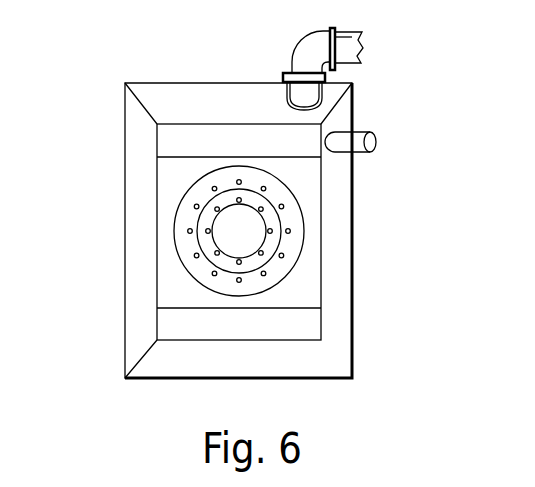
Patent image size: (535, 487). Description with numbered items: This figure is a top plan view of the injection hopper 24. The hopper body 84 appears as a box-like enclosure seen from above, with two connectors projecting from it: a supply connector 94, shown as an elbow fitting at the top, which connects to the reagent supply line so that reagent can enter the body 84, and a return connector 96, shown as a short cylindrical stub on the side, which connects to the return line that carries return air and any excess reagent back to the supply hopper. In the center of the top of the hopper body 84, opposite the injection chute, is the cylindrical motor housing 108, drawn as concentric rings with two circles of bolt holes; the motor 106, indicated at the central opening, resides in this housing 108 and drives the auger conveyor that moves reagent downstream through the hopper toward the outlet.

The injection hopper 24 is at (100, 178).
The body 84 is at (125, 287).
The supply connector 94 is at (362, 52).
The return connector 96 is at (376, 140).
The motor 106 is at (243, 232).
The motor housing 108 is at (265, 273).